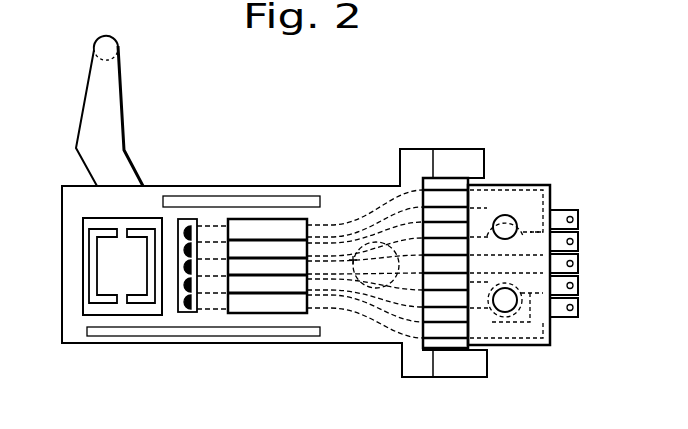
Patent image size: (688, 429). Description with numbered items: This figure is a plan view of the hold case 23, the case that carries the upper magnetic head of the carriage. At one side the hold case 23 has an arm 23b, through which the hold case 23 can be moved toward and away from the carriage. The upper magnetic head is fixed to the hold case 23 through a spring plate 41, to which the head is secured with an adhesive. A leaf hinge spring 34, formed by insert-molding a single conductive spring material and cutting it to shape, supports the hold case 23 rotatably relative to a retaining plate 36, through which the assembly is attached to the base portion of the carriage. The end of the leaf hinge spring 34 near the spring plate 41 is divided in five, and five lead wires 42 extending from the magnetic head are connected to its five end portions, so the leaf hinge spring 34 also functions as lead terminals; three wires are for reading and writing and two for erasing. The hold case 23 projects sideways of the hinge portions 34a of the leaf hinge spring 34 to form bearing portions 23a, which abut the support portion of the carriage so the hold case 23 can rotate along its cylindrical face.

The hold case 23 is at (217, 184).
The bearing portions 23a is at (455, 160).
The arm 23b is at (105, 107).
The leaf hinge spring 34 is at (277, 225).
The hinge portions 34a is at (428, 262).
The retaining plate 36 is at (540, 346).
The spring plate 41 is at (102, 305).
The lead wires 42 is at (185, 312).